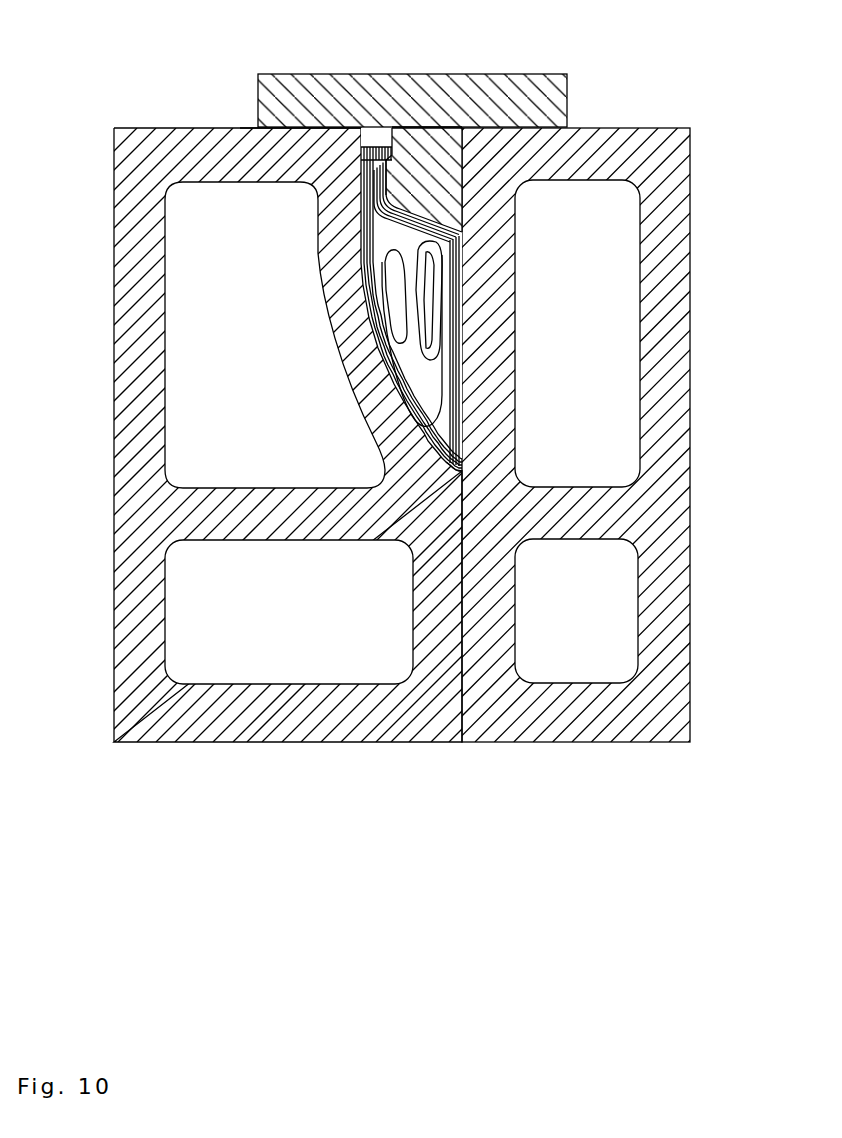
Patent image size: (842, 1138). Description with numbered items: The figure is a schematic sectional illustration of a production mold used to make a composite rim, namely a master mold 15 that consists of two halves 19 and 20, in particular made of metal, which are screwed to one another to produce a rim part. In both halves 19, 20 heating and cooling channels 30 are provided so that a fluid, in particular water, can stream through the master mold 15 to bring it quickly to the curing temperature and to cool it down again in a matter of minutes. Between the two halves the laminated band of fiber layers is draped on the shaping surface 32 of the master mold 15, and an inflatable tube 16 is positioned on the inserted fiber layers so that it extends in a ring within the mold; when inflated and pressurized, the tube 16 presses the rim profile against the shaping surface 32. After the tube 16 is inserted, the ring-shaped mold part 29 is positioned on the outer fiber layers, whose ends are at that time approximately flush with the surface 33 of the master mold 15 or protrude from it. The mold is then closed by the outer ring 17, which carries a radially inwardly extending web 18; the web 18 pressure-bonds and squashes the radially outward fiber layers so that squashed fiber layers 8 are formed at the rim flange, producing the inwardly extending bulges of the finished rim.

The master mold 15 is at (112, 96).
The outer ring 17 is at (567, 74).
The web 18 is at (373, 146).
The mold half 19 is at (680, 441).
The mold half 20 is at (124, 438).
The ring-shaped mold part 29 is at (437, 126).
The surface of the master mold 33 is at (242, 127).
The squashed fiber layers 8 is at (396, 163).
The inflatable tube 16 is at (437, 298).
The heating and cooling channels 30 is at (180, 266).
The shaping surface 32 is at (432, 478).